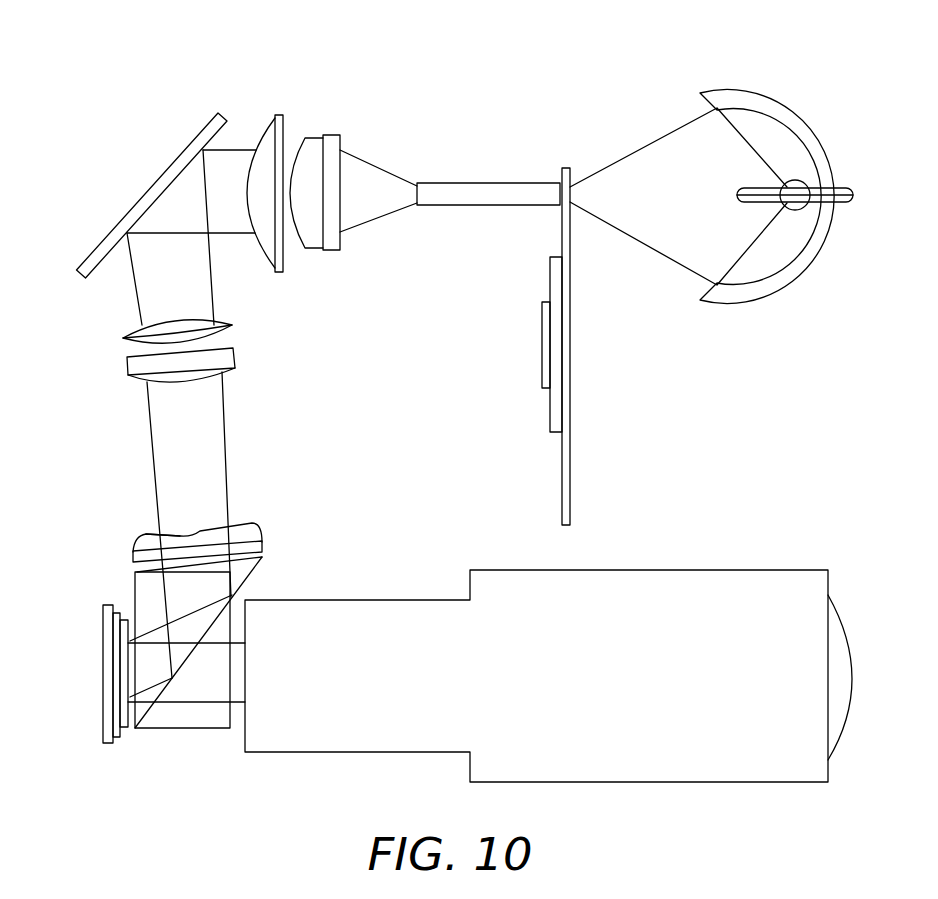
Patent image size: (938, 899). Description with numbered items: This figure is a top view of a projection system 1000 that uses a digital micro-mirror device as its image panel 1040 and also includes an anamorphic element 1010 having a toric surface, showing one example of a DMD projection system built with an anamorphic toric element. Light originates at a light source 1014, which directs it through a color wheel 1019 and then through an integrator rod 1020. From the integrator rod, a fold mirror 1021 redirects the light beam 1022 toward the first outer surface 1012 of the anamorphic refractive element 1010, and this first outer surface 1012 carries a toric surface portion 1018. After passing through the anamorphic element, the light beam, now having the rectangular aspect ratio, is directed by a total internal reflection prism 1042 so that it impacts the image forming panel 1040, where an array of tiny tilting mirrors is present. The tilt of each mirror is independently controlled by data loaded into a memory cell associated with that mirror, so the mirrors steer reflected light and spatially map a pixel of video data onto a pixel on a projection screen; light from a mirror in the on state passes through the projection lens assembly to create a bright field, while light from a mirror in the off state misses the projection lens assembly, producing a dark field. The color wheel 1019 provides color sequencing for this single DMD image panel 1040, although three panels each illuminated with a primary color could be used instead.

The projection system 1000 is at (533, 66).
The anamorphic refractive element 1010 is at (134, 551).
The first outer surface 1012 is at (173, 530).
The light source 1014 is at (797, 128).
The toric surface portion 1018 is at (217, 528).
The color wheel 1019 is at (571, 402).
The integrator rod 1020 is at (474, 183).
The fold mirror 1021 is at (147, 186).
The light beam 1022 is at (240, 150).
The image panel 1040 is at (103, 695).
The total internal reflection prism 1042 is at (166, 729).